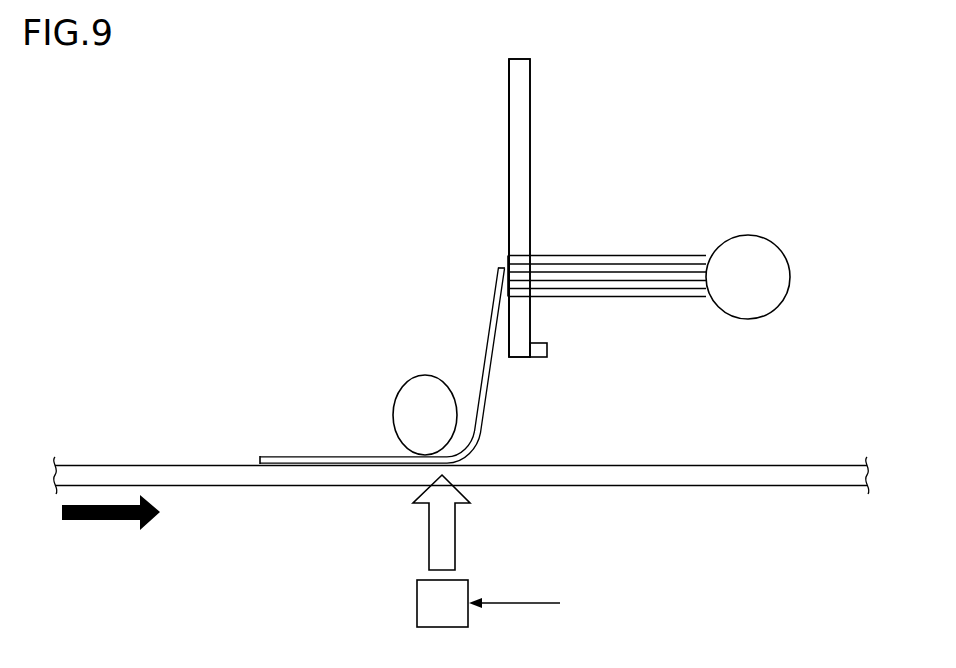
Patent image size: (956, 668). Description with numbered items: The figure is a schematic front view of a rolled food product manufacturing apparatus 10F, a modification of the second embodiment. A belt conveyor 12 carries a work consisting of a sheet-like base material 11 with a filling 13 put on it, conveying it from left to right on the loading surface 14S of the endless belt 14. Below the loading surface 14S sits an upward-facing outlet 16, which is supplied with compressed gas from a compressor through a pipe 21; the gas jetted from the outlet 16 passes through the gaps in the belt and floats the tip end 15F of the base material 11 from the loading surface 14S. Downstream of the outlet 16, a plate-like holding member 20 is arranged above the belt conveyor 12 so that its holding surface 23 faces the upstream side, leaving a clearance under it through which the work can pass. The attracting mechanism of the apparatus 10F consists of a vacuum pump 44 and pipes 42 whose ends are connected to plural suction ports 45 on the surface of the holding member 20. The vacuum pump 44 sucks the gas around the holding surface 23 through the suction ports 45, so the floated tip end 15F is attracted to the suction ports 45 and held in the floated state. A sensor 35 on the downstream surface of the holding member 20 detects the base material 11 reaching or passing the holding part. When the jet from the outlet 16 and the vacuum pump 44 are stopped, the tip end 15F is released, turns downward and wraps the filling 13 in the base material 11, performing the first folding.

The manufacturing apparatus 10F is at (734, 120).
The holding member 20 is at (531, 113).
The holding surface 23 is at (508, 110).
The pipes 42 is at (561, 278).
The suction ports 45 is at (505, 262).
The vacuum pump 44 is at (789, 265).
The sensor 35 is at (548, 352).
The tip end 15F is at (492, 305).
The base material 11 is at (283, 456).
The filling 13 is at (407, 407).
The endless belt 14 is at (733, 455).
The loading surface 14S is at (743, 466).
The belt conveyor 12 is at (826, 440).
The outlet 16 is at (417, 605).
The pipe 21 is at (520, 602).